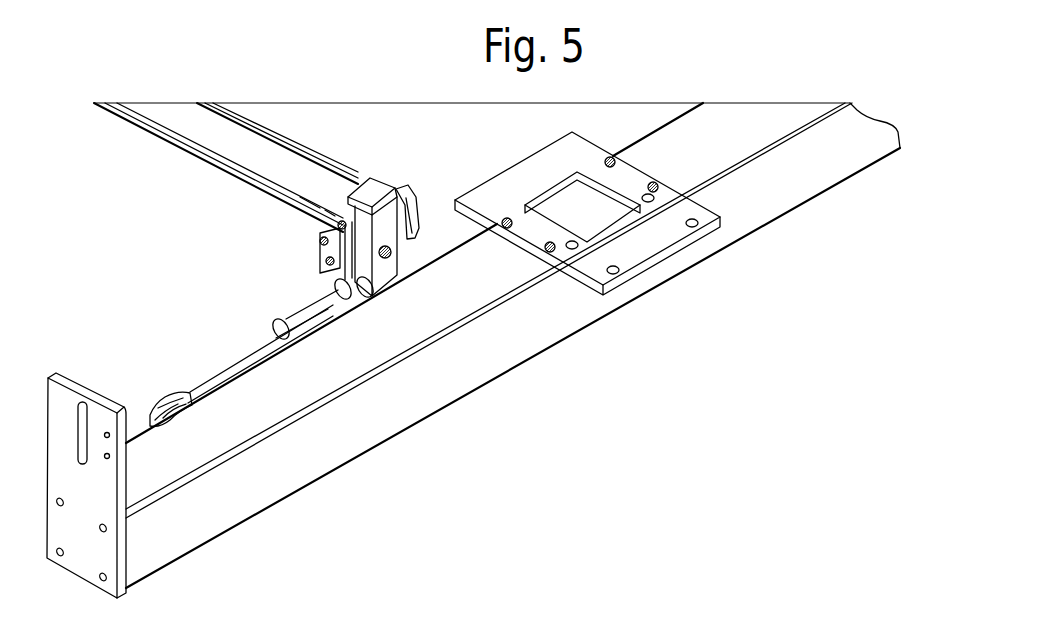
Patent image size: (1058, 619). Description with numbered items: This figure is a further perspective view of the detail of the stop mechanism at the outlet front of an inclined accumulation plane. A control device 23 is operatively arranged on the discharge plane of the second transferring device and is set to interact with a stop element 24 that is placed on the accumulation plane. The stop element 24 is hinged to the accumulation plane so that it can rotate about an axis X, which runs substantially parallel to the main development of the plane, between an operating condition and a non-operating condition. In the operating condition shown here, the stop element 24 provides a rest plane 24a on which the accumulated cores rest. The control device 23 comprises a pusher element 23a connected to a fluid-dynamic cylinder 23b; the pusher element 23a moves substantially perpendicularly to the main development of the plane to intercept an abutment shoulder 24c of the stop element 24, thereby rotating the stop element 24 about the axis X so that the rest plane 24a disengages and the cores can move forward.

The control device 23 is at (263, 323).
The pusher element 23a is at (330, 290).
The fluid-dynamic cylinder 23b is at (200, 390).
The stop element 24 is at (404, 199).
The rest plane 24a is at (350, 194).
The abutment shoulder 24c is at (410, 212).
The axis X is at (442, 287).